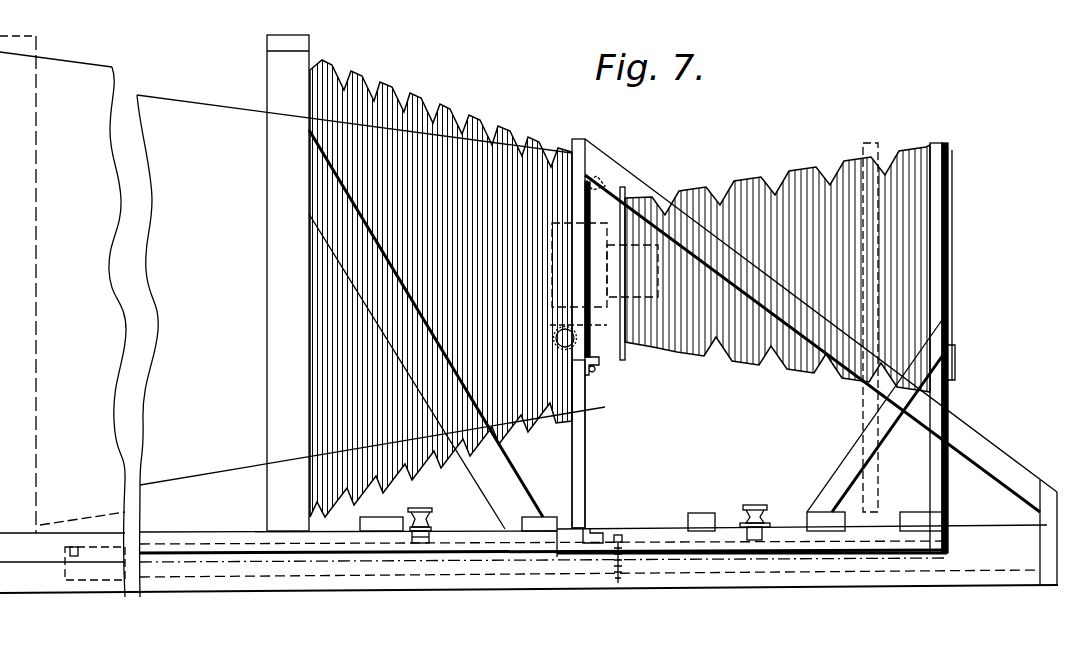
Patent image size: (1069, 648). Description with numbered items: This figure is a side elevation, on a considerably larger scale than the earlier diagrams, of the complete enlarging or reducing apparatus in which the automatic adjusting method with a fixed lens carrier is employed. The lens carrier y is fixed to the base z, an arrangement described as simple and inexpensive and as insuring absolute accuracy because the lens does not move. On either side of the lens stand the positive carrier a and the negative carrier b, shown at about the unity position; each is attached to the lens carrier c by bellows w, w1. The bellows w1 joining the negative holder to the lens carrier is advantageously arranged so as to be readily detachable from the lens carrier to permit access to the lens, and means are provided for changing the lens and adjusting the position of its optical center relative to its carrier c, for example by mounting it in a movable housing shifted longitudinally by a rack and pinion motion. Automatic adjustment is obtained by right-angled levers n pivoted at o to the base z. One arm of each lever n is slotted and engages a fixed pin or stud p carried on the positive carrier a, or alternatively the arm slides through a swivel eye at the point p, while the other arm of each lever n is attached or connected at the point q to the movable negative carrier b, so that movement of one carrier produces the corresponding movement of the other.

The positive carrier a is at (268, 272).
The bellows w is at (473, 127).
The bellows w1 is at (794, 180).
The lens carrier y is at (571, 138).
The negative carrier b is at (945, 226).
The lens carrier c is at (384, 442).
The fixed pin or stud p is at (429, 507).
The right-angled lever n is at (589, 542).
The pivot o is at (619, 535).
The connection point q is at (755, 506).
The base z is at (892, 573).